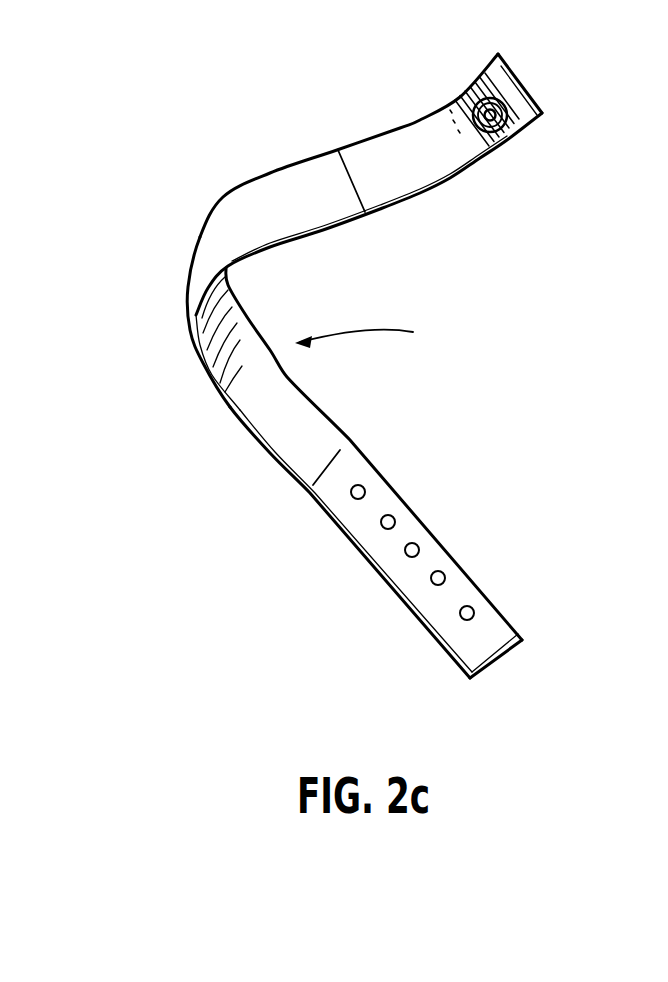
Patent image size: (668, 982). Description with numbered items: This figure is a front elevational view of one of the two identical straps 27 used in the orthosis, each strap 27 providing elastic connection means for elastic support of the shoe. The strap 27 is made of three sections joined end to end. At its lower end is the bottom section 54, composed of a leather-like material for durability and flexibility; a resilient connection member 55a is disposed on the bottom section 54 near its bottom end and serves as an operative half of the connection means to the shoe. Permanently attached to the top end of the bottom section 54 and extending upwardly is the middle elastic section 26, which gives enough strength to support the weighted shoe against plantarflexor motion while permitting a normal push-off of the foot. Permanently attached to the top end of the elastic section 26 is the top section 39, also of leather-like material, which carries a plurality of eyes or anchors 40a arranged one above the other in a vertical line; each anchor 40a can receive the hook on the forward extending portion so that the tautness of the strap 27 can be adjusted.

The middle elastic section 26 is at (207, 238).
The strap 27 is at (380, 333).
The top section 39 is at (443, 607).
The anchor 40a is at (365, 486).
The bottom section 54 is at (430, 168).
The resilient connection member 55a is at (508, 103).